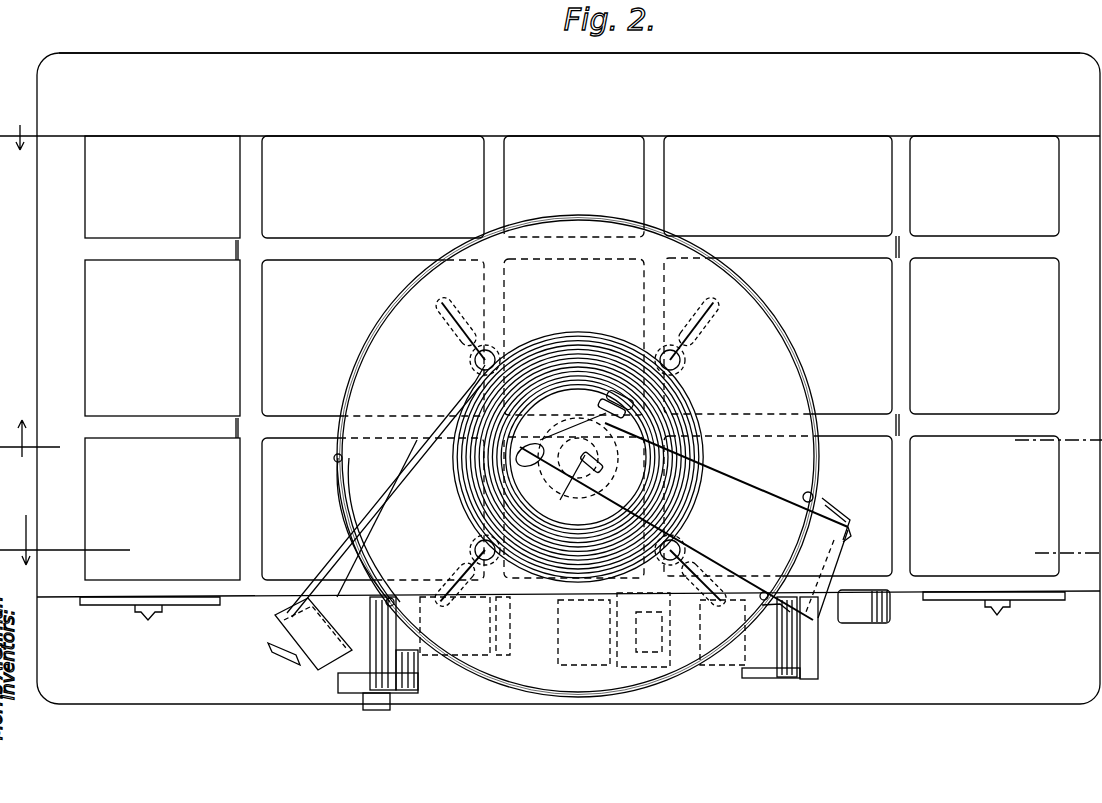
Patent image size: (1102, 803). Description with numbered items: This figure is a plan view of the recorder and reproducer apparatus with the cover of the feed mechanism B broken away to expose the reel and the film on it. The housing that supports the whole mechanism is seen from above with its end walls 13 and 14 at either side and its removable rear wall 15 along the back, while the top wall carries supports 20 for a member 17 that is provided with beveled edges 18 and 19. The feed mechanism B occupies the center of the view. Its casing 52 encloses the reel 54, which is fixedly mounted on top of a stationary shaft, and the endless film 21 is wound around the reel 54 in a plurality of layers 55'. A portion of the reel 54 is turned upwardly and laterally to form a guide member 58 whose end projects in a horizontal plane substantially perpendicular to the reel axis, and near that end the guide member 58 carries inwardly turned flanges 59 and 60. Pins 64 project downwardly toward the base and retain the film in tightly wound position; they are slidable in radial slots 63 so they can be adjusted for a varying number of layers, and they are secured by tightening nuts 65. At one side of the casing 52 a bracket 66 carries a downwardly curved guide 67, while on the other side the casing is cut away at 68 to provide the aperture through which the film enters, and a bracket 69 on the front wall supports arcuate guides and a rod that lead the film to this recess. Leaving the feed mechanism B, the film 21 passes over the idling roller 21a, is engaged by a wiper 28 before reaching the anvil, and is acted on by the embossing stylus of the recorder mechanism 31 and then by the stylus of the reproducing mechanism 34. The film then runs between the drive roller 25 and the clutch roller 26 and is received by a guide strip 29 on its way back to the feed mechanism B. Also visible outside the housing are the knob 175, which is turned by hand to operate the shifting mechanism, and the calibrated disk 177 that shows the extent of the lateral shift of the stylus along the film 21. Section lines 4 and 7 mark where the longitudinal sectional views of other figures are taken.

The end wall 13 is at (1006, 405).
The end wall 14 is at (37, 290).
The removable rear wall 15 is at (380, 60).
The member 17 is at (918, 356).
The beveled edge 18 is at (996, 238).
The beveled edge 19 is at (183, 240).
The support 20 is at (262, 332).
The film 21 is at (330, 560).
The idling roller 21a is at (786, 672).
The drive roller 25 is at (410, 694).
The clutch roller 26 is at (345, 592).
The wiper 28 is at (820, 672).
The guide strip 29 is at (375, 695).
The recorder mechanism 31 is at (628, 650).
The reproducing mechanism 34 is at (478, 628).
The casing 52 is at (776, 312).
The feed mechanism B is at (812, 367).
The reel 54 is at (605, 475).
The layers 55' is at (683, 393).
The guide member 58 is at (460, 484).
The inwardly turned flange 59 is at (640, 458).
The inwardly turned flange 60 is at (590, 470).
The radial slot 63 is at (430, 325).
The pin 64 is at (492, 352).
The nut 65 is at (480, 348).
The bracket 66 is at (836, 508).
The downwardly curved guide 67 is at (850, 535).
The cut-away portion 68 is at (342, 490).
The bracket 69 is at (318, 672).
The knob 175 is at (875, 624).
The calibrated disk 177 is at (960, 603).
The section line 4 is at (30, 439).
The section line 7 is at (65, 345).